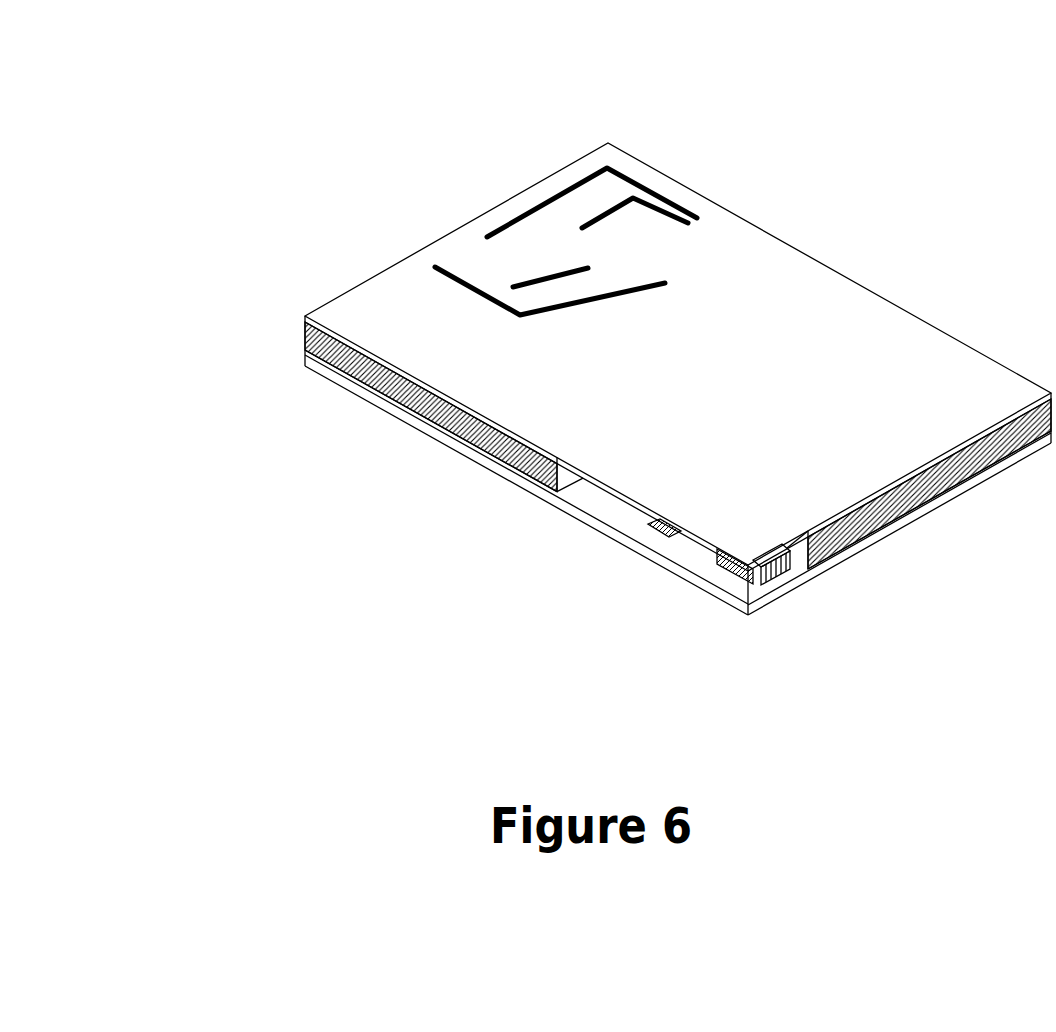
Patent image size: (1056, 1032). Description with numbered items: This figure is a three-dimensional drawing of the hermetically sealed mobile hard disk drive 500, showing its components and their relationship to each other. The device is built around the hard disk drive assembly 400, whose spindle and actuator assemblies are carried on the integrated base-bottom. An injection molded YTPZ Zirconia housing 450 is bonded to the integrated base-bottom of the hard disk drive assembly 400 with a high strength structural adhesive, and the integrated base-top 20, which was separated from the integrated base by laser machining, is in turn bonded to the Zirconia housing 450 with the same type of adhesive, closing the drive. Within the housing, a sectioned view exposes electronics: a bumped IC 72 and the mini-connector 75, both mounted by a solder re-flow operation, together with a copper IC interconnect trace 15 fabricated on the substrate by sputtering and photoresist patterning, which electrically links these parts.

The hermetically sealed mobile hard disk drive 500 is at (678, 328).
The integrated base-top 20 is at (602, 417).
The hard disk drive assembly 400 is at (282, 353).
The Zirconia housing 450 is at (440, 479).
The bumped IC 72 is at (549, 546).
The IC interconnect trace 15 is at (621, 580).
The mini-connector 75 is at (830, 612).